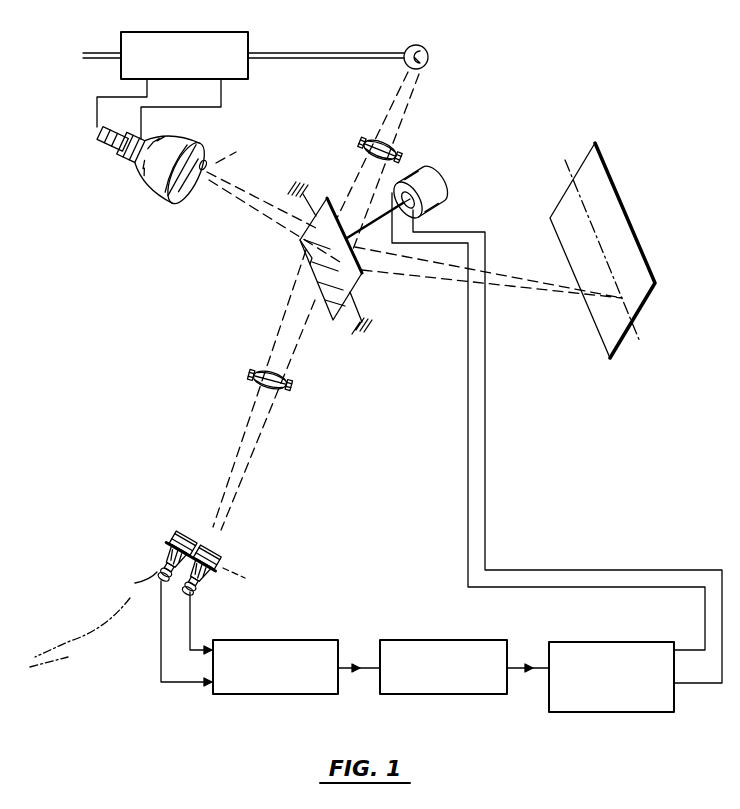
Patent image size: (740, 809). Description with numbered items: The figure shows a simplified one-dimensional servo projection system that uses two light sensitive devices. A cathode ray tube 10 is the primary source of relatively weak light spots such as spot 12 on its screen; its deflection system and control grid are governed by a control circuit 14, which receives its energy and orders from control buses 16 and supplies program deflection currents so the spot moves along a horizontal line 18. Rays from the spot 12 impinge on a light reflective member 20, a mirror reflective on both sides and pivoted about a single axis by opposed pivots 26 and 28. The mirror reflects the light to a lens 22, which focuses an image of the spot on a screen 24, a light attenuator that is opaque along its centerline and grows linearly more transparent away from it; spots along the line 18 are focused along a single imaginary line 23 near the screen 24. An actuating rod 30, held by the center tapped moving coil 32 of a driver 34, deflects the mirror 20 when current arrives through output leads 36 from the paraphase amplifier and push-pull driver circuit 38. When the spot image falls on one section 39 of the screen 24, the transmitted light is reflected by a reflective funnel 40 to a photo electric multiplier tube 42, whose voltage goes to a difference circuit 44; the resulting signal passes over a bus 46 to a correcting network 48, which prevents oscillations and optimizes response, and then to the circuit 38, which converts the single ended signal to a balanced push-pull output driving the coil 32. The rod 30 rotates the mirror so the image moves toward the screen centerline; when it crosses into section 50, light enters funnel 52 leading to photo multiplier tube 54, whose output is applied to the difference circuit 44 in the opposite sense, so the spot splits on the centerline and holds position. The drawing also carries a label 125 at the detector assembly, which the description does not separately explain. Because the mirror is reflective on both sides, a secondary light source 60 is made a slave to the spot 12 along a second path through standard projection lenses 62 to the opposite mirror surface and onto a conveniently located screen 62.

The cathode ray tube 10 is at (160, 179).
The light spot 12 is at (204, 160).
The control circuit 14 is at (244, 42).
The control buses 16 is at (97, 52).
The horizontal line 18 is at (153, 203).
The light reflective member 20 is at (333, 319).
The lens 22 is at (286, 388).
The line 23 is at (155, 537).
The screen 24 is at (190, 549).
The pivot 26 is at (357, 308).
The pivot 28 is at (310, 200).
The actuating rod 30 is at (380, 226).
The moving coil 32 is at (427, 205).
The driver 34 is at (438, 188).
The output leads 36 is at (470, 437).
The paraphase amplifier and push-pull driver circuit 38 is at (556, 641).
The screen section 39 is at (222, 556).
The reflective funnel 40 is at (183, 580).
The photo electric multiplier tube 42 is at (202, 588).
The difference circuit 44 is at (330, 641).
The bus 46 is at (350, 666).
The correcting network 48 is at (500, 641).
The screen section 50 is at (178, 536).
The funnel 52 is at (160, 553).
The photo multiplier tube 54 is at (93, 619).
The secondary light source 60 is at (428, 51).
The projection lenses / screen 62 is at (364, 145).
The slit 125 is at (207, 553).